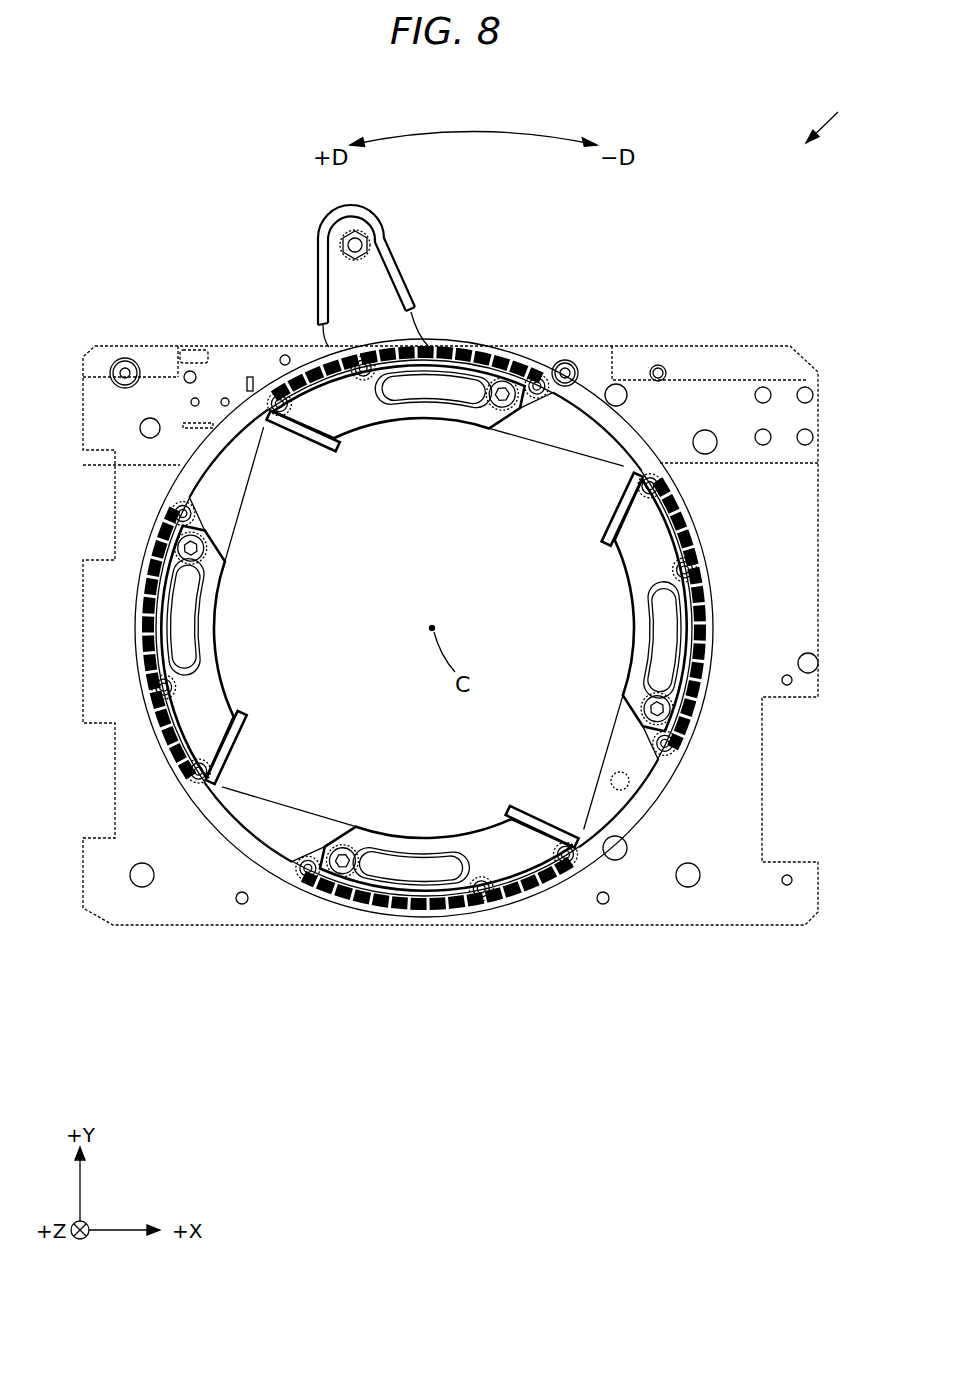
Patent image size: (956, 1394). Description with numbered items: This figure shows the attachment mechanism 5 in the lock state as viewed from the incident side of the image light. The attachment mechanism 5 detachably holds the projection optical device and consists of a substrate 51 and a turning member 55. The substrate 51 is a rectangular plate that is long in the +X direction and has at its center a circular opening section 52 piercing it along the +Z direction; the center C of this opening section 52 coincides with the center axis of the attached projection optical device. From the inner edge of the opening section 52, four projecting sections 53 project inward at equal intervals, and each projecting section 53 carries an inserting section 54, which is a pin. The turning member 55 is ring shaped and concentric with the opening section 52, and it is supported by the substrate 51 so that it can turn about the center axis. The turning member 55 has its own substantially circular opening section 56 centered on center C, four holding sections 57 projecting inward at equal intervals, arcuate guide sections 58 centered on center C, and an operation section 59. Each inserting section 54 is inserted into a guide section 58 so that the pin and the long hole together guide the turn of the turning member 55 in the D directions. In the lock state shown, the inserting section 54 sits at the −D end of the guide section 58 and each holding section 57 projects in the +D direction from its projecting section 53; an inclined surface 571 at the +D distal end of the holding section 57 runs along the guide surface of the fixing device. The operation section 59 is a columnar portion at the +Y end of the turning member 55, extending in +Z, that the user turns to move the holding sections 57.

The attachment mechanism 5 is at (832, 113).
The substrate 51 is at (727, 346).
The opening section 52 is at (630, 498).
The projecting section 53 is at (547, 445).
The inserting section 54 is at (502, 398).
The turning member 55 is at (610, 437).
The opening section 56 is at (613, 783).
The holding section 57 is at (350, 420).
The inclined surface 571 is at (300, 442).
The guide section 58 is at (393, 392).
The operation section 59 is at (397, 237).